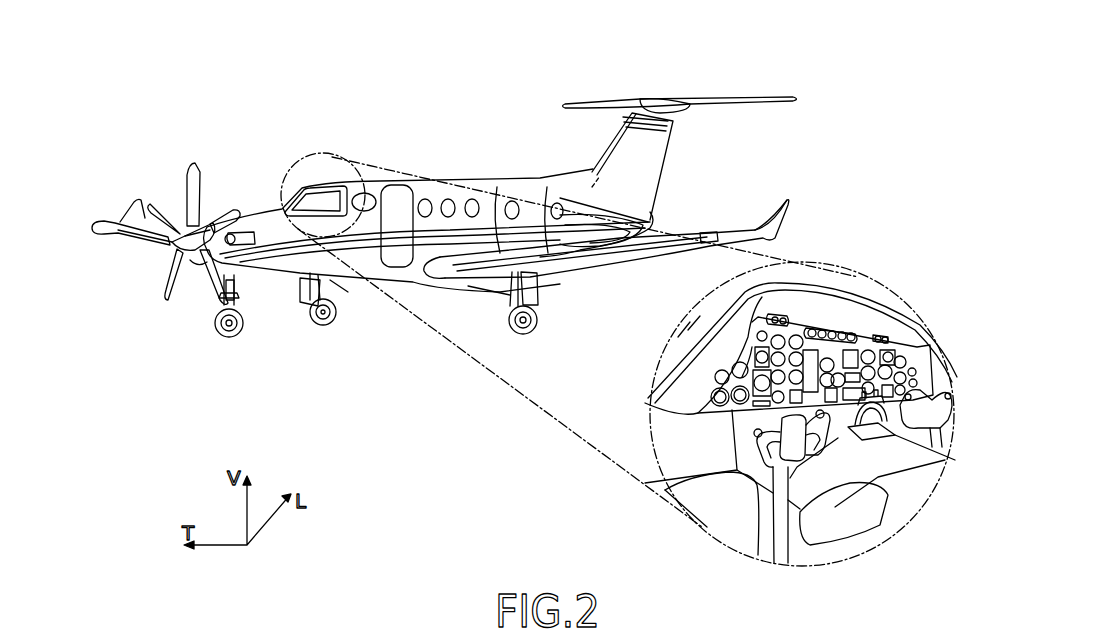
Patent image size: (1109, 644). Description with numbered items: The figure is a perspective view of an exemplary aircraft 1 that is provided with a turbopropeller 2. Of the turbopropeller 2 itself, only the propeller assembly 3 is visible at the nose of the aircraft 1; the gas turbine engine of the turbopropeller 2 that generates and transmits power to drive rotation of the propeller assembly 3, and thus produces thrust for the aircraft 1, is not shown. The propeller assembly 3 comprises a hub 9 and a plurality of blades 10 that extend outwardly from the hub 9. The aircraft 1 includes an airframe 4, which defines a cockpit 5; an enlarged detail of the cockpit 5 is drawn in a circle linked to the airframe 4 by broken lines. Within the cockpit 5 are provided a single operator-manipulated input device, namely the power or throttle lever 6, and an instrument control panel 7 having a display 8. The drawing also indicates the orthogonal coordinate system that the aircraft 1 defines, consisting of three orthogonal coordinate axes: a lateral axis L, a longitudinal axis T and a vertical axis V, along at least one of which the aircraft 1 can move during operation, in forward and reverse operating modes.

The aircraft 1 is at (444, 275).
The turbopropeller 2 is at (376, 344).
The propeller assembly 3 is at (174, 272).
The airframe 4 is at (444, 194).
The cockpit 5 is at (801, 388).
The power lever 6 is at (836, 440).
The instrument control panel 7 is at (808, 332).
The display 8 is at (857, 340).
The hub 9 is at (173, 245).
The blades 10 is at (157, 212).